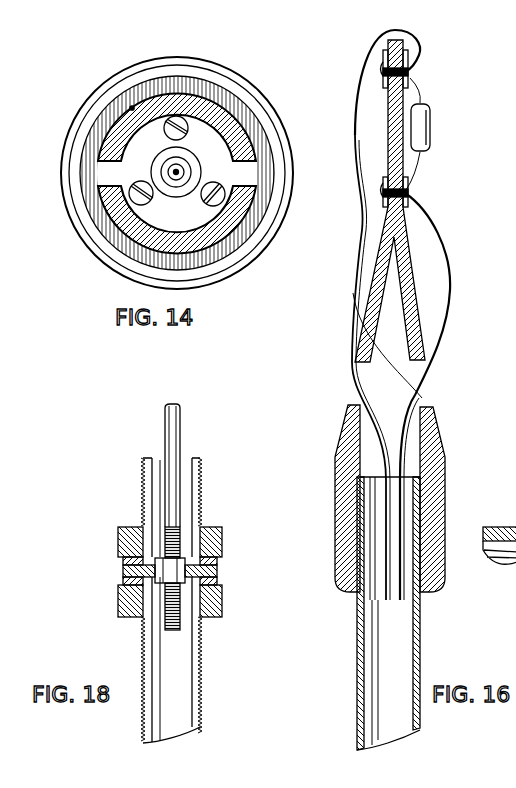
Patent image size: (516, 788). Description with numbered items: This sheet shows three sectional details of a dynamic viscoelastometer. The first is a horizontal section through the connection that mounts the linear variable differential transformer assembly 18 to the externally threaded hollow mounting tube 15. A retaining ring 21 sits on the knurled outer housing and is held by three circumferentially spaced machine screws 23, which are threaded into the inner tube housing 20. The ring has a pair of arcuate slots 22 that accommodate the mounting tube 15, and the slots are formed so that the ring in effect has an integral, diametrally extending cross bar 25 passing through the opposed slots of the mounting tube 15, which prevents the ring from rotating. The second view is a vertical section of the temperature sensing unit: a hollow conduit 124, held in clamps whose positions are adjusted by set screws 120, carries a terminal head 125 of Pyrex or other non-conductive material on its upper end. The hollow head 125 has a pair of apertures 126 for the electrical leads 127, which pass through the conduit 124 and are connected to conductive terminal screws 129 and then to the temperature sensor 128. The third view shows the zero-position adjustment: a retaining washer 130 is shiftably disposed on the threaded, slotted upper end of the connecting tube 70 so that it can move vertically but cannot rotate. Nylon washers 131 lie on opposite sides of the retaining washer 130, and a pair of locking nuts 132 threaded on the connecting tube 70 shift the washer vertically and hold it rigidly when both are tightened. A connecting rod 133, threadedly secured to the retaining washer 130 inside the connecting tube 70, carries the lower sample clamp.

In FIG. 14, the mounting tube 15 is at (208, 110).
In FIG. 14, the linear variable differential transformer assembly 18 is at (100, 220).
In FIG. 14, the inner tube housing 20 is at (172, 73).
In FIG. 14, the retaining ring 21 is at (88, 176).
In FIG. 14, the arcuate slots 22 is at (132, 107).
In FIG. 14, the machine screws 23 is at (185, 121).
In FIG. 14, the cross bar 25 is at (256, 170).
In FIG. 18, the connecting tube 70 is at (201, 487).
In FIG. 16, the set screws 120 is at (499, 527).
In FIG. 16, the hollow conduit 124 is at (419, 651).
In FIG. 16, the terminal head 125 is at (413, 298).
In FIG. 16, the apertures 126 is at (423, 398).
In FIG. 16, the electrical leads 127 is at (320, 380).
In FIG. 16, the temperature sensor 128 is at (429, 128).
In FIG. 16, the conductive terminal screws 129 is at (411, 72).
In FIG. 18, the retaining washer 130 is at (217, 571).
In FIG. 18, the nylon washers 131 is at (217, 561).
In FIG. 18, the locking nuts 132 is at (213, 527).
In FIG. 18, the connecting rod 133 is at (178, 403).